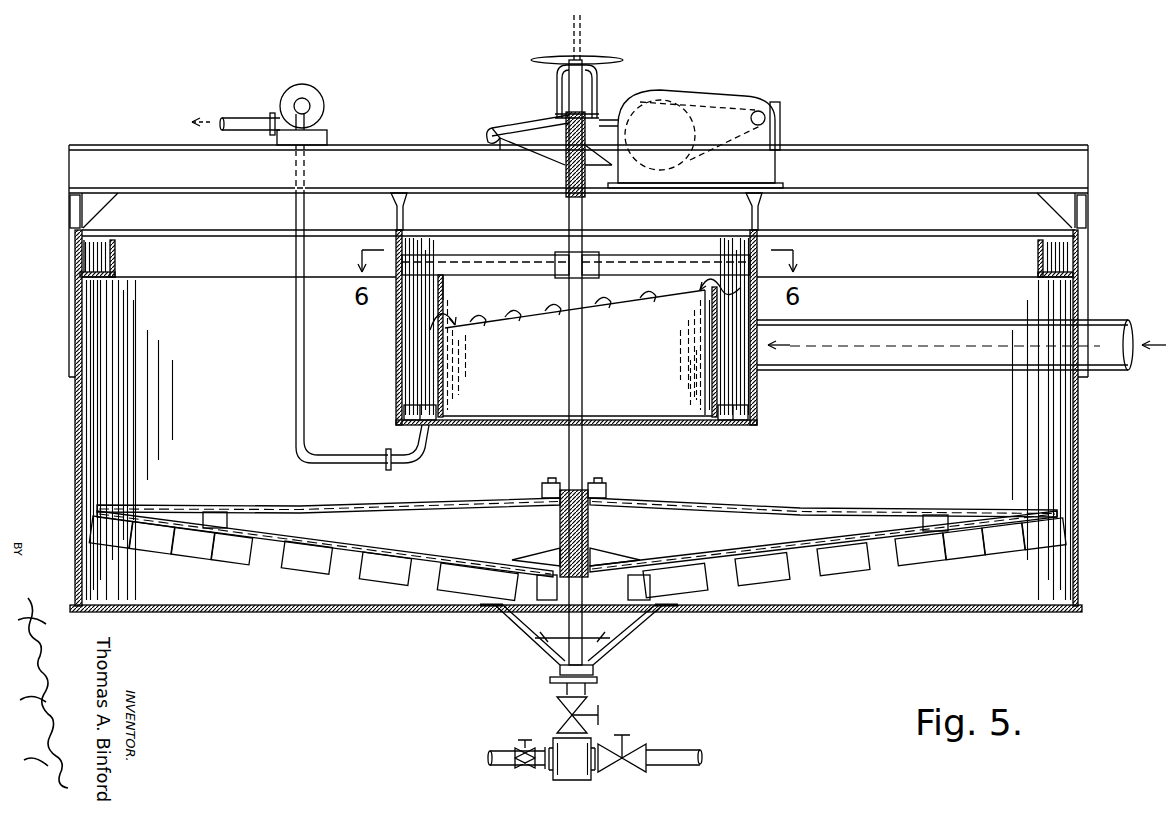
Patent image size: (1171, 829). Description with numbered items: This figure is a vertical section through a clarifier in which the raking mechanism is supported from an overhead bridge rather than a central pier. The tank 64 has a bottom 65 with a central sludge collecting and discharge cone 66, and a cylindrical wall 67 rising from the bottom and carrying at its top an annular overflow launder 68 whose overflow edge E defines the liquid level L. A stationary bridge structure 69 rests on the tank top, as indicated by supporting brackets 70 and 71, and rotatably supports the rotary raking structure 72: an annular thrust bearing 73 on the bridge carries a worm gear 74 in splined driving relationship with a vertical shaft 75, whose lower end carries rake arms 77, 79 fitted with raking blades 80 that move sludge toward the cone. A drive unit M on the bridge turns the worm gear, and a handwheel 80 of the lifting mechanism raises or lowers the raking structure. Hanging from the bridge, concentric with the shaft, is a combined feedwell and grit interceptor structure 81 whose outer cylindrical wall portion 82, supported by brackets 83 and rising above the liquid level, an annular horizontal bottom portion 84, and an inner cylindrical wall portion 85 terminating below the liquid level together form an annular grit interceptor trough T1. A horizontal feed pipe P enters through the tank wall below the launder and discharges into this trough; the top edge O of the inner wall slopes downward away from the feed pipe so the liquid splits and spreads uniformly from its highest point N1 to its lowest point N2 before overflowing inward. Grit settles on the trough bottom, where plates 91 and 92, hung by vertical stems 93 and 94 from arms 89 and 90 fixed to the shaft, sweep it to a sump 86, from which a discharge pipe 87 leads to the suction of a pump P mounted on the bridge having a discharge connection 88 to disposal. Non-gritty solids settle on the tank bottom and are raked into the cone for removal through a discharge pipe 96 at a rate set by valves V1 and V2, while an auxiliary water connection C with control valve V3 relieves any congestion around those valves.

The tank 64 is at (1095, 226).
The bottom 65 is at (322, 612).
The discharge cone 66 is at (522, 636).
The cylindrical wall 67 is at (74, 440).
The annular overflow launder 68 is at (84, 262).
The bridge structure 69 is at (418, 145).
The supporting bracket 70 is at (70, 211).
The supporting bracket 71 is at (1087, 210).
The rotary raking structure 72 is at (633, 496).
The annular thrust bearing 73 is at (504, 145).
The worm gear 74 is at (494, 128).
The vertical shaft 75 is at (584, 372).
The rake arm 77 is at (817, 508).
The rake arm 79 is at (486, 498).
The raking blades / handwheel 80 is at (604, 58).
The combined feedwell and grit interceptor structure 81 is at (398, 390).
The outer cylindrical wall portion 82 is at (396, 313).
The brackets 83 is at (392, 200).
The annular horizontal bottom portion 84 is at (736, 427).
The inner cylindrical wall portion 85 is at (712, 388).
The sump 86 is at (427, 440).
The discharge pipe 87 is at (352, 466).
The discharge connection 88 is at (246, 118).
The arm 89 is at (500, 257).
The arm 90 is at (645, 258).
The grit engaging and conveying plate 91 is at (402, 414).
The grit engaging and conveying plate 92 is at (745, 414).
The vertical stem 93 is at (412, 347).
The vertical stem 94 is at (700, 318).
The discharge pipe 96 is at (674, 750).
The feed pipe / pump P is at (316, 92).
The drive unit M is at (707, 90).
The overflow edge E is at (1053, 241).
The liquid level L is at (196, 234).
The top edge O is at (540, 312).
The highest point N1 is at (655, 292).
The lowest point N2 is at (450, 322).
The grit interceptor trough T1 is at (712, 360).
The valve V1 is at (565, 715).
The valve V2 is at (612, 766).
The control valve V3 is at (523, 762).
The auxiliary water connection C is at (500, 750).